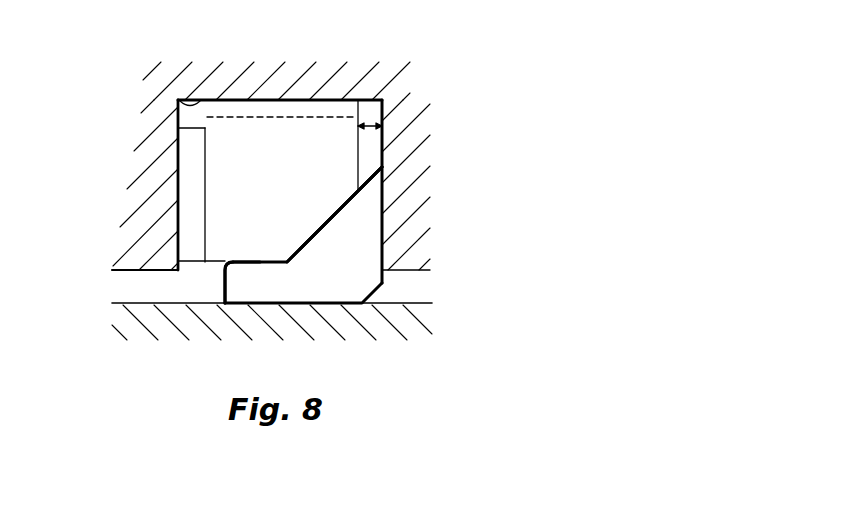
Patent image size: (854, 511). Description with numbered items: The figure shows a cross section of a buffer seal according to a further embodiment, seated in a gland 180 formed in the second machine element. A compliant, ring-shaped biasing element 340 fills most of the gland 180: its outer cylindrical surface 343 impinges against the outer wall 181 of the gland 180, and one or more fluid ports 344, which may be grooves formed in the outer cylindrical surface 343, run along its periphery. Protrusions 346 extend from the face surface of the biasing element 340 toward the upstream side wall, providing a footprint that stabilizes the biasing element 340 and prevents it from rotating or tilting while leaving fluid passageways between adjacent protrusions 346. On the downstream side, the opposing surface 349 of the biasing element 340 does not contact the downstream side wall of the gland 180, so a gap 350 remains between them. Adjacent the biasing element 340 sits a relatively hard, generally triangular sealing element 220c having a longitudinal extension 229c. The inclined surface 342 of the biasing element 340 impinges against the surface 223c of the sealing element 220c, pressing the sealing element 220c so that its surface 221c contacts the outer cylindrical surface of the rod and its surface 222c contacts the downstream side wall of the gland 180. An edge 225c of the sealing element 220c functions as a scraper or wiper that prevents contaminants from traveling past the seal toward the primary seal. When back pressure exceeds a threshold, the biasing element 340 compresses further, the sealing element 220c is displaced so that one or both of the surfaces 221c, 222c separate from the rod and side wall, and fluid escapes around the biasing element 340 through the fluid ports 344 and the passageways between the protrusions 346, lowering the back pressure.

The gland 180 is at (383, 103).
The outer wall of the gland 181 is at (178, 100).
The biasing element 340 is at (263, 140).
The surface 342 is at (300, 248).
The outer cylindrical surface 343 is at (318, 100).
The fluid port 344 is at (237, 108).
The protrusions 346 is at (193, 172).
The opposing surface 349 is at (358, 145).
The gap 350 is at (369, 123).
The sealing element 220c is at (292, 285).
The surface 221c is at (340, 305).
The surface 222c is at (383, 198).
The surface 223c is at (333, 212).
The edge 225c is at (225, 293).
The longitudinal extension 229c is at (248, 293).